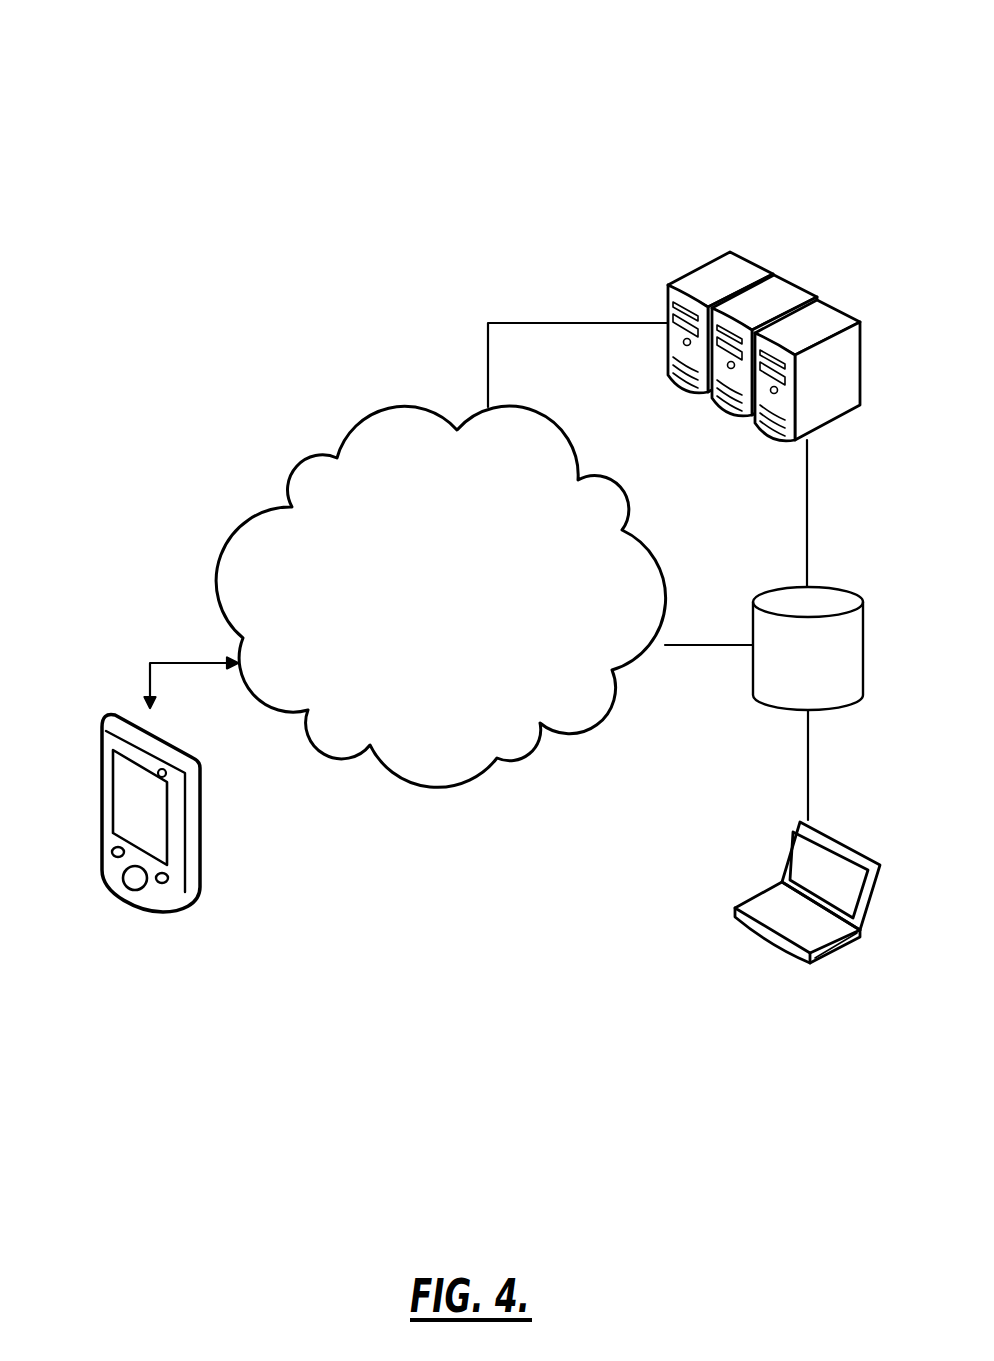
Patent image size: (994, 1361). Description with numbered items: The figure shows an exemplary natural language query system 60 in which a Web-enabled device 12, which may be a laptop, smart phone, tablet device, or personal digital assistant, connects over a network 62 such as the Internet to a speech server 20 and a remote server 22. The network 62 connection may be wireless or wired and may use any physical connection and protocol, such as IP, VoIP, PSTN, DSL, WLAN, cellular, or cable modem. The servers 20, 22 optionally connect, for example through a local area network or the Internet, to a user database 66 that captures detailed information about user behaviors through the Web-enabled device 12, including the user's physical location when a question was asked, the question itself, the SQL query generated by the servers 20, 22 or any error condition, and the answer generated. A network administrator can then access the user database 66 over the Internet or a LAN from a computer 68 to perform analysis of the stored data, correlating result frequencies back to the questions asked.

The system 60 is at (363, 92).
The network 62 is at (367, 417).
The speech server 20 is at (711, 313).
The remote server 22 is at (693, 272).
The user database 66 is at (790, 585).
The computer 68 is at (760, 892).
The Web-enabled device 12 is at (130, 713).